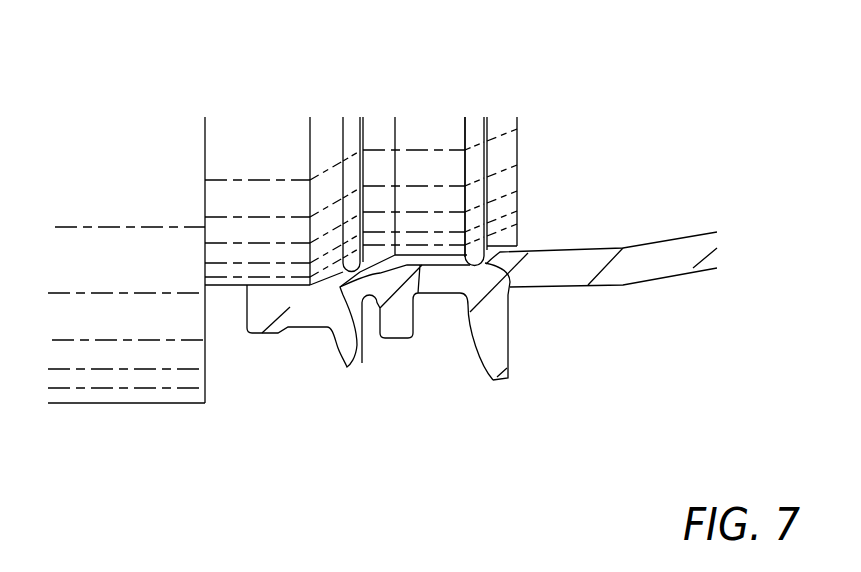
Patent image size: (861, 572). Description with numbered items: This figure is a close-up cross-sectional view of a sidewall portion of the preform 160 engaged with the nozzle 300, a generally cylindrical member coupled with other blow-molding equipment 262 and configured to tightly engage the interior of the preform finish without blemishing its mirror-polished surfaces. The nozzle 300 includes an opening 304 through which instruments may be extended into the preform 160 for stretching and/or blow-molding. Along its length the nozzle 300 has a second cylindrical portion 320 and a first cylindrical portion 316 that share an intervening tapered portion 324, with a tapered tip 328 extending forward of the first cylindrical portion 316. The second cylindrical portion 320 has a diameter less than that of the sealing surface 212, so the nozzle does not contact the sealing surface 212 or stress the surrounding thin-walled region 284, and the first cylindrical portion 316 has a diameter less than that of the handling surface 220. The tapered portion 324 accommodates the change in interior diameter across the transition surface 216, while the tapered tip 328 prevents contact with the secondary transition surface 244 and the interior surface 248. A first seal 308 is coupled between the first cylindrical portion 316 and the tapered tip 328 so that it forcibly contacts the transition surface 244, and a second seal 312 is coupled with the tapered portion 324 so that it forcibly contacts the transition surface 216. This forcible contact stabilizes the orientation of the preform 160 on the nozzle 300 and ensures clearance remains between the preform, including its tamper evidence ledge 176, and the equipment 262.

The nozzle 300 is at (222, 90).
The second cylindrical portion 320 is at (277, 162).
The tapered portion 324 is at (328, 128).
The second seal 312 is at (350, 128).
The first cylindrical portion 316 is at (446, 138).
The first seal 308 is at (475, 125).
The tapered tip 328 is at (497, 148).
The opening 304 is at (525, 182).
The interior surface 248 is at (661, 165).
The blow-molding equipment 262 is at (140, 403).
The sealing surface 212 is at (262, 297).
The thin-walled region 284 is at (265, 323).
The transition surface 216 is at (362, 363).
The handling surface 220 is at (425, 297).
The secondary transition surface 244 is at (518, 290).
The preform 160 is at (620, 285).
The tamper evidence ledge 176 is at (508, 380).